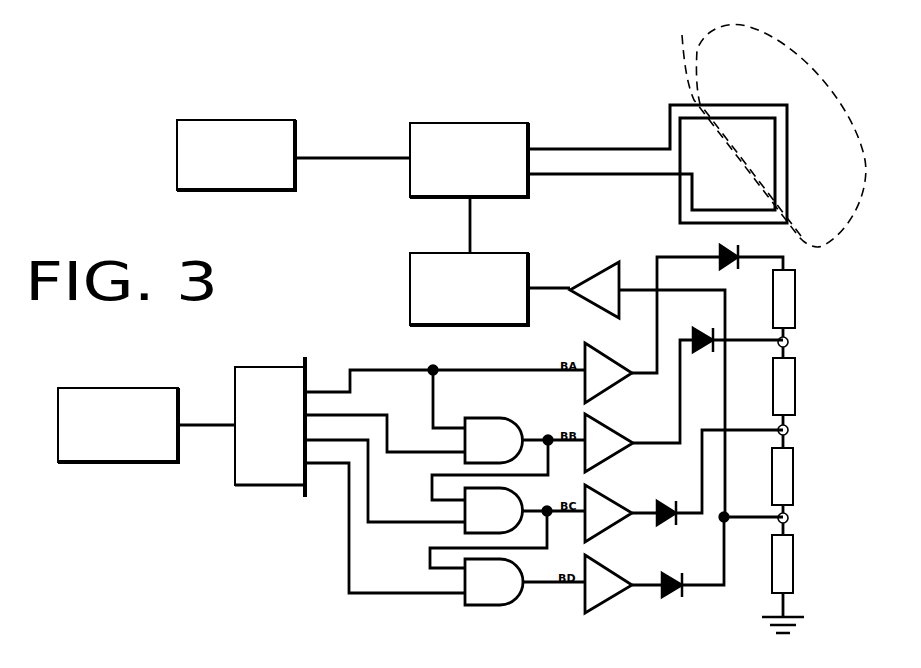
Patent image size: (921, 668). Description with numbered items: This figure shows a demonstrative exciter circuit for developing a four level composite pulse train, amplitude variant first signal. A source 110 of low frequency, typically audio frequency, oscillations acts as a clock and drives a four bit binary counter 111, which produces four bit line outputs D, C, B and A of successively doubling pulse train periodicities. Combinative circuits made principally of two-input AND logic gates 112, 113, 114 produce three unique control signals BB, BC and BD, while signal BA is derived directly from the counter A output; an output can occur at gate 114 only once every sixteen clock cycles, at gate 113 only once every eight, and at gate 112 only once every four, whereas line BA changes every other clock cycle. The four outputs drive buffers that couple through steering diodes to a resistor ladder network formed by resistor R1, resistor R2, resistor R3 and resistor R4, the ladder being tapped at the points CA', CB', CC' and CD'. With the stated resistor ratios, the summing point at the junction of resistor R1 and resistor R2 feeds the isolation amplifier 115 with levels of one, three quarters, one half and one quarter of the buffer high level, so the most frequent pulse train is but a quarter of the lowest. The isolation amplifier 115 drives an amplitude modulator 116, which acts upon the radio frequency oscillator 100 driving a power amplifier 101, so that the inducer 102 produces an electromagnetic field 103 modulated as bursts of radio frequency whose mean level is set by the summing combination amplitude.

The radio frequency oscillator 100 is at (200, 170).
The power amplifier 101 is at (507, 160).
The inducer 102 is at (693, 155).
The electromagnetic field 103 is at (843, 99).
The source of low frequency oscillations 110 is at (75, 432).
The four bit binary counter 111 is at (255, 428).
The two-input AND logic gate 112 is at (500, 437).
The two-input AND logic gate 113 is at (497, 503).
The two-input AND logic gate 114 is at (493, 573).
The isolation amplifier 115 is at (600, 288).
The amplitude modulator 116 is at (430, 305).
The resistor R1 is at (790, 572).
The resistor R2 is at (790, 485).
The resistor R3 is at (793, 390).
The resistor R4 is at (785, 308).
The voltage tap CA' is at (804, 263).
The voltage tap CB' is at (813, 355).
The voltage tap CC' is at (813, 447).
The voltage tap CD' is at (814, 532).